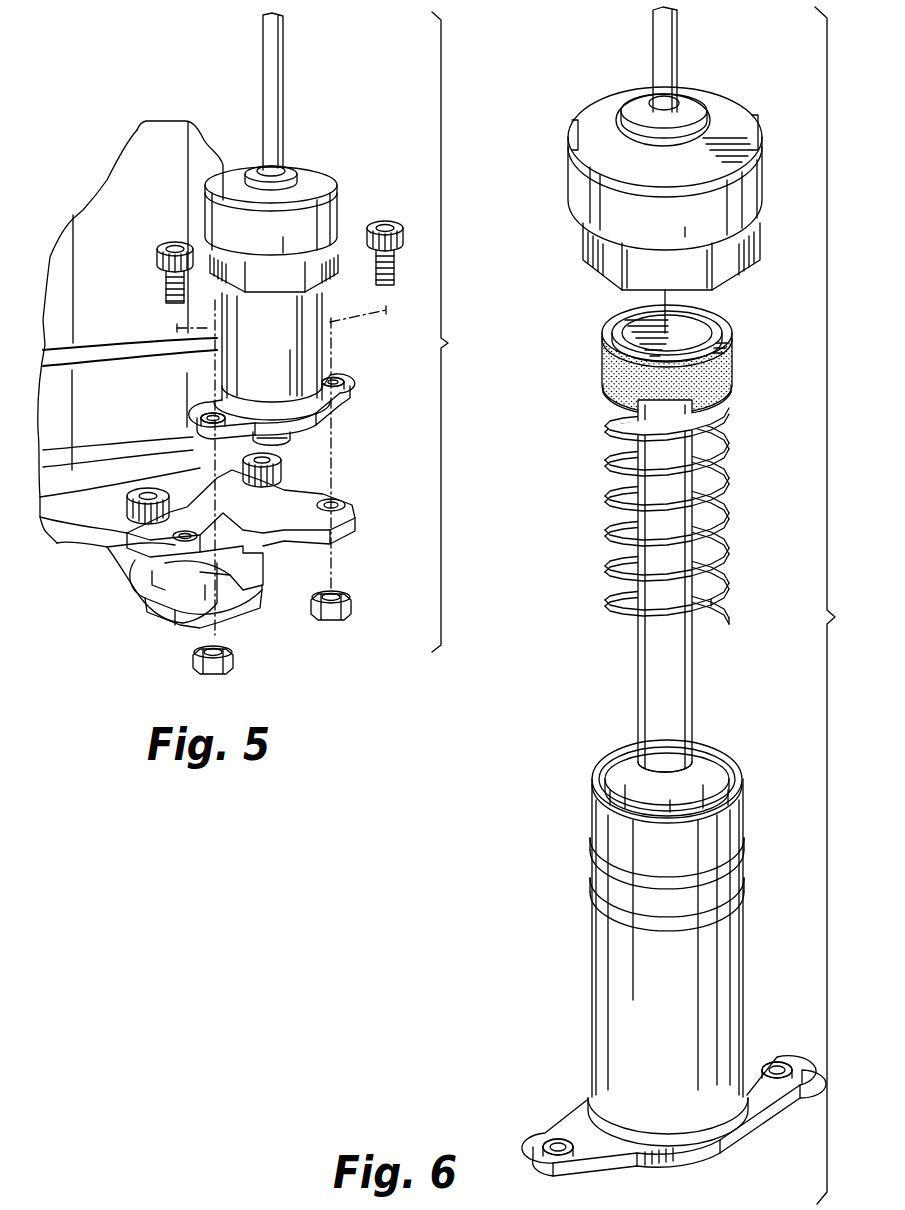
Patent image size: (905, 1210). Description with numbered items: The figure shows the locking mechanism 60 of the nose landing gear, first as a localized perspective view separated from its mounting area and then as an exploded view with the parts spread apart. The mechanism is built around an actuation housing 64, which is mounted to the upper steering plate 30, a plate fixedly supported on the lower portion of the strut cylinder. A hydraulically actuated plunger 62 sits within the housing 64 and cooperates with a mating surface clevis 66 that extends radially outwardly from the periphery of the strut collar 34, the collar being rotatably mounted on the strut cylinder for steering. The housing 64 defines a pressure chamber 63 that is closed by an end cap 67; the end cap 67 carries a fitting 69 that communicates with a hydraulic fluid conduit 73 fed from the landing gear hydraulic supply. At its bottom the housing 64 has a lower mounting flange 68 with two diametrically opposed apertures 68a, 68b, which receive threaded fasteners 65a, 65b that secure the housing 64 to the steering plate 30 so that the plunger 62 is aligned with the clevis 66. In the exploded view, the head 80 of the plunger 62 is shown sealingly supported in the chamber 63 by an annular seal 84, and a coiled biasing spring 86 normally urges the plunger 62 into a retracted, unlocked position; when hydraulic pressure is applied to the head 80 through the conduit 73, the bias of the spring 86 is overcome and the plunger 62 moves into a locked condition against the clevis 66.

In FIG. 5, the upper steering plate 30 is at (155, 557).
In FIG. 5, the strut collar 34 is at (170, 592).
In FIG. 5, the locking mechanism 60 is at (234, 137).
In FIG. 6, the locking mechanism 60 is at (548, 819).
In FIG. 6, the plunger 62 is at (648, 674).
In FIG. 6, the pressure chamber 63 is at (710, 762).
In FIG. 5, the actuation housing 64 is at (292, 312).
In FIG. 6, the actuation housing 64 is at (605, 1007).
In FIG. 5, the threaded fastener 65a is at (160, 291).
In FIG. 5, the threaded fastener 65b is at (388, 222).
In FIG. 5, the clevis 66 is at (250, 596).
In FIG. 5, the end cap 67 is at (336, 206).
In FIG. 6, the end cap 67 is at (587, 214).
In FIG. 5, the lower mounting flange 68 is at (325, 420).
In FIG. 6, the lower mounting flange 68 is at (573, 1132).
In FIG. 5, the aperture 68a is at (204, 416).
In FIG. 6, the aperture 68a is at (560, 1156).
In FIG. 5, the aperture 68b is at (340, 378).
In FIG. 6, the aperture 68b is at (778, 1064).
In FIG. 5, the fitting 69 is at (291, 164).
In FIG. 5, the hydraulic fluid conduit 73 is at (288, 41).
In FIG. 6, the hydraulic fluid conduit 73 is at (680, 31).
In FIG. 6, the head 80 is at (734, 368).
In FIG. 6, the annular seal 84 is at (604, 378).
In FIG. 6, the coiled biasing spring 86 is at (645, 586).